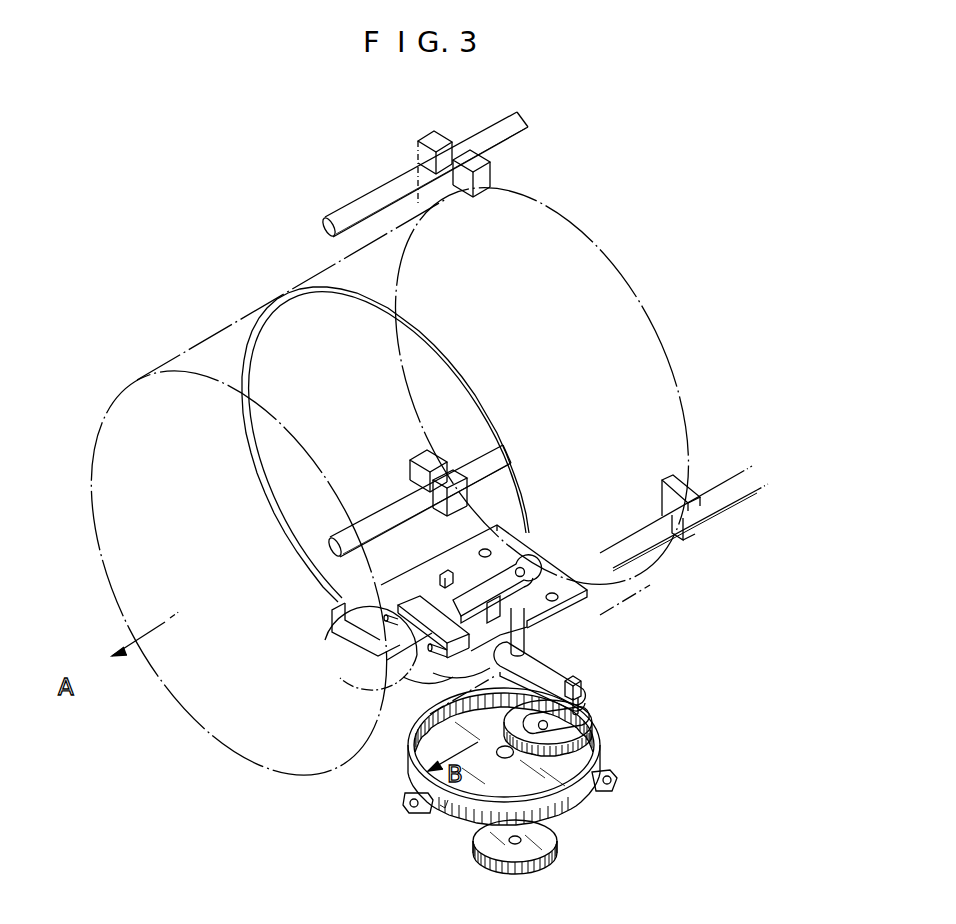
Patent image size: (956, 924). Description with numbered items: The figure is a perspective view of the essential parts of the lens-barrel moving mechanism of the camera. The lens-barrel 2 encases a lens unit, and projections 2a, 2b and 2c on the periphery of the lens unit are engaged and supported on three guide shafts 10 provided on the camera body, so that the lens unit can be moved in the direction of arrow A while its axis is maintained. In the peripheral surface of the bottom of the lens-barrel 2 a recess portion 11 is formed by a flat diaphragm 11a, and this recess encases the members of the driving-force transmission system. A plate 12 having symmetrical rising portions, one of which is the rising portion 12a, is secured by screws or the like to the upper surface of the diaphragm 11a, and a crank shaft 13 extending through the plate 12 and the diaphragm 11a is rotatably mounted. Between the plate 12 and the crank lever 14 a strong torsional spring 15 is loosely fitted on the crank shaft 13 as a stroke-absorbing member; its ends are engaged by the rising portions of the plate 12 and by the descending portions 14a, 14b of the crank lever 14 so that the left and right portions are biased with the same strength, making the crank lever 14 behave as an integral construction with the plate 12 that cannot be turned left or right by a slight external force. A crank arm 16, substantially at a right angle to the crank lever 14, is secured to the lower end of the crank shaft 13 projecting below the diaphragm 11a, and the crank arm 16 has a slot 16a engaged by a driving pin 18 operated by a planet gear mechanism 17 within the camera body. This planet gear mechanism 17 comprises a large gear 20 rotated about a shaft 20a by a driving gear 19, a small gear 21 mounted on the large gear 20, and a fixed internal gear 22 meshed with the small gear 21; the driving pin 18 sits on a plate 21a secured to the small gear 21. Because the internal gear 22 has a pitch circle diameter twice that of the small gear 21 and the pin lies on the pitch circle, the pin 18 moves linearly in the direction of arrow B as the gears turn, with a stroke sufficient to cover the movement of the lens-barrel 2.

The lens-barrel 2 is at (565, 226).
The projection 2a is at (430, 135).
The projection 2b is at (688, 480).
The projection 2c is at (414, 455).
The guide shaft 10 is at (372, 199).
The recess portion 11 is at (403, 663).
The flat diaphragm 11a is at (397, 707).
The plate 12 is at (540, 555).
The rising portion 12a is at (438, 578).
The crank shaft 13 is at (525, 633).
The crank lever 14 is at (340, 606).
The descending portion 14a is at (385, 648).
The descending portion 14b is at (407, 686).
The torsional spring 15 is at (518, 598).
The crank arm 16 is at (565, 672).
The slot 16a is at (582, 705).
The planet gear mechanism 17 is at (632, 802).
The driving pin 18 is at (583, 685).
The driving gear 19 is at (548, 848).
The large gear 20 is at (580, 802).
The shaft 20a is at (500, 760).
The small gear 21 is at (575, 745).
The plate 21a is at (582, 718).
The fixed internal gear 22 is at (603, 773).